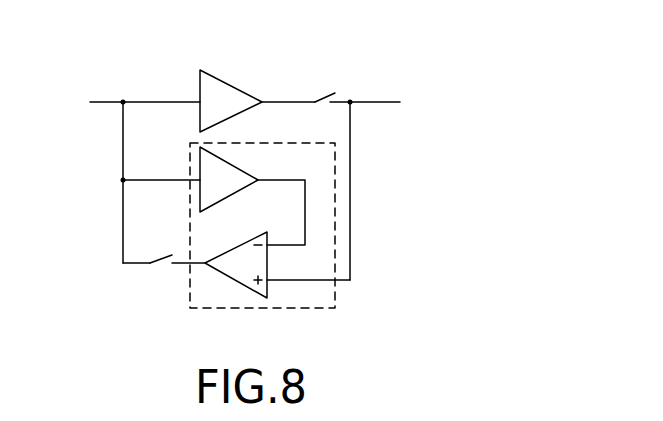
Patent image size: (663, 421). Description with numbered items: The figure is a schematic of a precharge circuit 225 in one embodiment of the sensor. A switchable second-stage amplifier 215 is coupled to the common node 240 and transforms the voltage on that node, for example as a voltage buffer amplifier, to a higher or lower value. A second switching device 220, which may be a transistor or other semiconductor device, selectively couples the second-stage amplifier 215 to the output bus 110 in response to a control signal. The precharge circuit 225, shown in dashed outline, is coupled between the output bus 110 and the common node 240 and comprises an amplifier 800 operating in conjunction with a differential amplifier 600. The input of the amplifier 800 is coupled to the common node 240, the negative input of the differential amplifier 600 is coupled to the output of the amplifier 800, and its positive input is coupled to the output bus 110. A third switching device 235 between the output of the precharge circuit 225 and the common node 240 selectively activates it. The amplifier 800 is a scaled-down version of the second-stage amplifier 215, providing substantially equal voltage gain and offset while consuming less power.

The common node 240 is at (123, 102).
The switchable second-stage amplifier 215 is at (218, 77).
The second switching device 220 is at (323, 96).
The output bus 110 is at (408, 187).
The amplifier 800 is at (237, 164).
The third switching device 235 is at (160, 262).
The differential amplifier 600 is at (237, 246).
The precharge circuit 225 is at (336, 308).